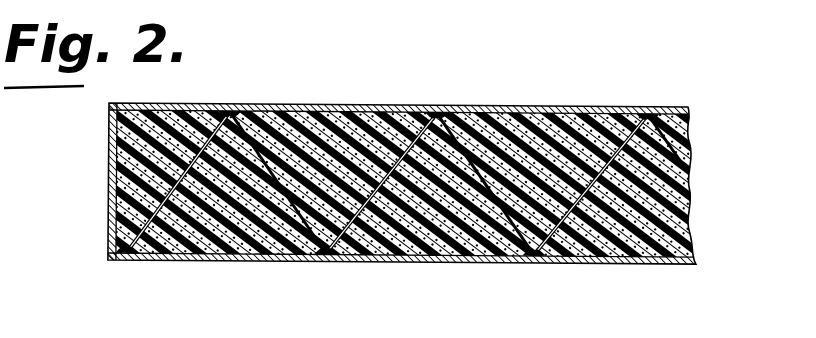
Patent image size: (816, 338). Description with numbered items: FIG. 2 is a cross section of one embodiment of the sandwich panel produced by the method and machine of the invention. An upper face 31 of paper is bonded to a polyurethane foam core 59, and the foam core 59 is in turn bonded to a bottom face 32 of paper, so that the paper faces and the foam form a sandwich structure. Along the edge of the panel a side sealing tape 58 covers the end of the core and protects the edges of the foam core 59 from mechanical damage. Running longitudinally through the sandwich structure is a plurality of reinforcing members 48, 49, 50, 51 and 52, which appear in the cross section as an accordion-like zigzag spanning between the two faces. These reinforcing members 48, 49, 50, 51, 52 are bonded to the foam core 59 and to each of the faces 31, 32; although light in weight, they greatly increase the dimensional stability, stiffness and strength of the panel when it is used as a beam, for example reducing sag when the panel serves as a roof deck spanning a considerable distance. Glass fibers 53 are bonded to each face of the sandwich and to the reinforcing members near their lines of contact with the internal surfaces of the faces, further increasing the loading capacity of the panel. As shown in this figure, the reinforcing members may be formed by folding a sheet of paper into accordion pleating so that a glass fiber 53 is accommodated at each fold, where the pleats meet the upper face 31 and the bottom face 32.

The upper face 31 is at (432, 110).
The bottom face 32 is at (692, 263).
The reinforcing member 48 is at (166, 230).
The reinforcing member 49 is at (286, 240).
The reinforcing member 50 is at (376, 228).
The reinforcing member 51 is at (500, 230).
The reinforcing member 52 is at (585, 235).
The glass fibers 53 is at (128, 255).
The side sealing tape 58 is at (108, 174).
The polyurethane foam core 59 is at (330, 106).